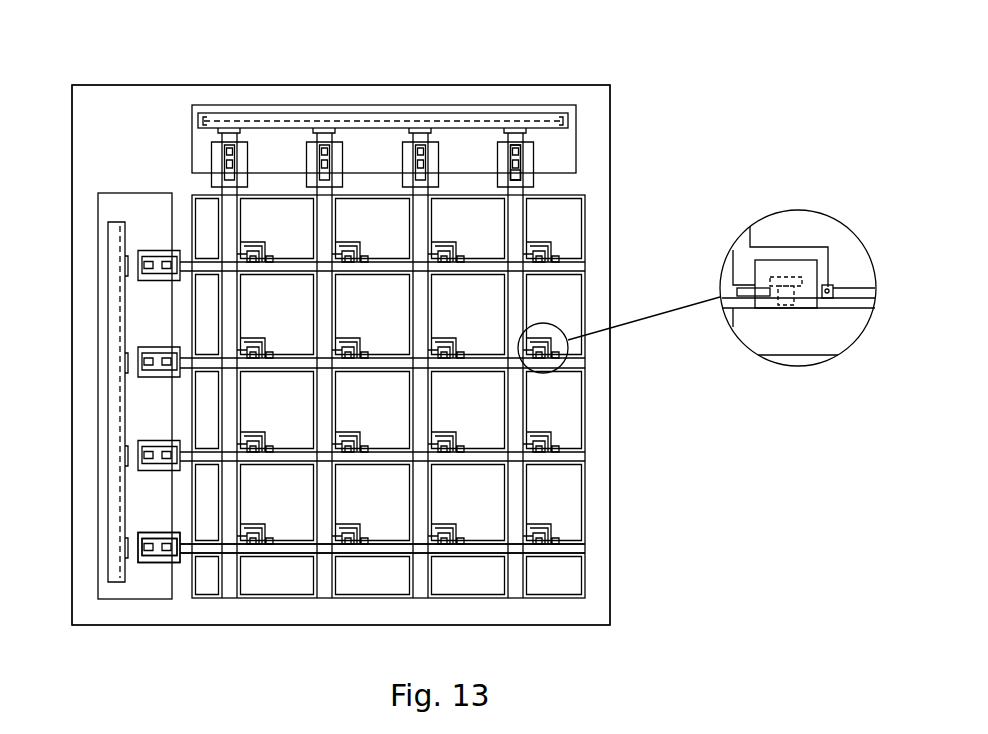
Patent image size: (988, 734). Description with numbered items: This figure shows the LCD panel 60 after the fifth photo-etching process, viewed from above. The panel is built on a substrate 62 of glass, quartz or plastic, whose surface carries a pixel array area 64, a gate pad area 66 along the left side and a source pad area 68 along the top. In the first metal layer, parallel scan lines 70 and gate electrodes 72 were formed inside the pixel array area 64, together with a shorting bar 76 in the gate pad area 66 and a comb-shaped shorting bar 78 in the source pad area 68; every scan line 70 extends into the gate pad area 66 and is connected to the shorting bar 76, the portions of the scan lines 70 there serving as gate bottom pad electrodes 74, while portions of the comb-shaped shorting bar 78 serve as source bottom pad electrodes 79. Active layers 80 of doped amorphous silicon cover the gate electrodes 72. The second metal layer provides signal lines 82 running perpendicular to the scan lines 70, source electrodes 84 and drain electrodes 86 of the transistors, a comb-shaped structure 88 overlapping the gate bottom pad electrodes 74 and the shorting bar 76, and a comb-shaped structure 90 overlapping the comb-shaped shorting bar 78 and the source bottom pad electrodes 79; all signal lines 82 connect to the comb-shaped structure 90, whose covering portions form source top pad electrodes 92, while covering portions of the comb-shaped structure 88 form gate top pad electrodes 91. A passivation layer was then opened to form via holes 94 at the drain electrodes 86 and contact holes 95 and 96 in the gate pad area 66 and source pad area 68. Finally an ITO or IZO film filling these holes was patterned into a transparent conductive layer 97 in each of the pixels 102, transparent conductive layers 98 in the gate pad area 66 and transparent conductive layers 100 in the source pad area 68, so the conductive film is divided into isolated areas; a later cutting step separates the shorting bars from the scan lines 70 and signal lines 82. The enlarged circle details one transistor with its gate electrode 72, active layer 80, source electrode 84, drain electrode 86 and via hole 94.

The LCD panel 60 is at (681, 161).
The substrate 62 is at (611, 388).
The pixel array area 64 is at (587, 581).
The gate pad area 66 is at (100, 582).
The source pad area 68 is at (240, 113).
The scan lines 70 is at (568, 266).
The gate electrodes 72 is at (790, 276).
The gate bottom pad electrodes 74 is at (148, 258).
The shorting bar 76 is at (114, 395).
The comb-shaped shorting bar 78 is at (472, 120).
The source bottom pad electrodes 79 is at (236, 166).
The active layers 80 is at (808, 258).
The signal lines 82 is at (232, 598).
The source electrodes 84 is at (757, 292).
The drain electrodes 86 is at (808, 289).
The comb-shaped structure 88 is at (108, 527).
The comb-shaped structure 90 is at (567, 120).
The gate top pad electrodes 91 is at (153, 563).
The source top pad electrodes 92 is at (534, 160).
The via holes 94 is at (840, 290).
The contact holes 95 is at (148, 358).
The contact holes 96 is at (330, 163).
The patterned transparent conductive layer 97 is at (568, 426).
The patterned transparent conductive layers 98 is at (175, 563).
The patterned transparent conductive layers 100 is at (534, 181).
The pixels 102 is at (478, 542).